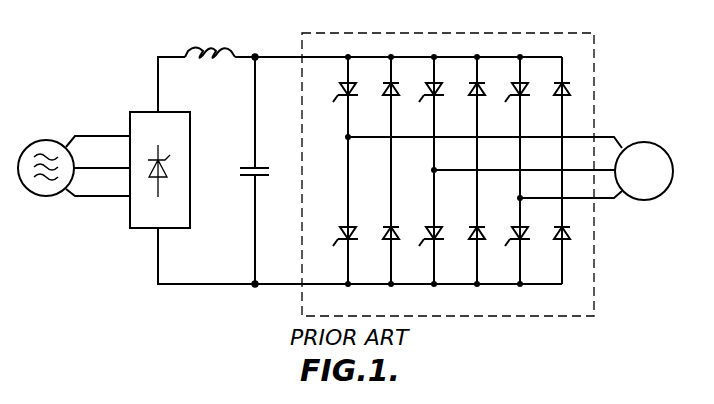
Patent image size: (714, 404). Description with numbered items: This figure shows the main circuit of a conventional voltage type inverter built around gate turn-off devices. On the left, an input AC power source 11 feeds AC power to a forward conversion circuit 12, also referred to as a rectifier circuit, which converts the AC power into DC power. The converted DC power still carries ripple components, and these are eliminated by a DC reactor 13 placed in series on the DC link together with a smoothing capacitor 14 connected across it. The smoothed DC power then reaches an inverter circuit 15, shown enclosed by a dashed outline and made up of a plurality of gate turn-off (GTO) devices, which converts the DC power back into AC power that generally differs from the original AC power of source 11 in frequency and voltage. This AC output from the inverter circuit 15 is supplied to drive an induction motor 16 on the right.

The input AC power source 11 is at (50, 138).
The forward conversion circuit 12 is at (191, 122).
The DC reactor 13 is at (212, 53).
The smoothing capacitor 14 is at (247, 181).
The inverter circuit 15 is at (491, 317).
The induction motor 16 is at (641, 142).